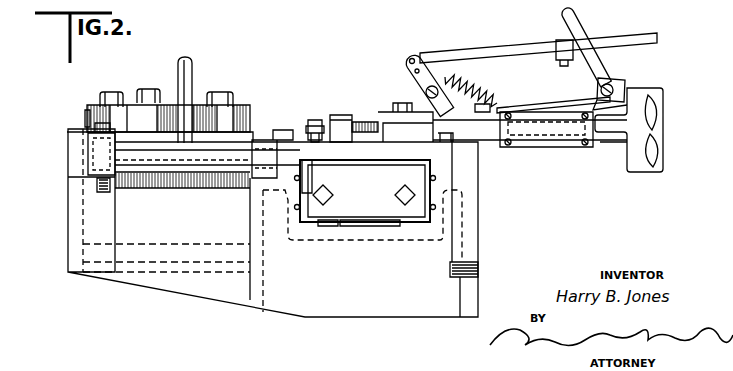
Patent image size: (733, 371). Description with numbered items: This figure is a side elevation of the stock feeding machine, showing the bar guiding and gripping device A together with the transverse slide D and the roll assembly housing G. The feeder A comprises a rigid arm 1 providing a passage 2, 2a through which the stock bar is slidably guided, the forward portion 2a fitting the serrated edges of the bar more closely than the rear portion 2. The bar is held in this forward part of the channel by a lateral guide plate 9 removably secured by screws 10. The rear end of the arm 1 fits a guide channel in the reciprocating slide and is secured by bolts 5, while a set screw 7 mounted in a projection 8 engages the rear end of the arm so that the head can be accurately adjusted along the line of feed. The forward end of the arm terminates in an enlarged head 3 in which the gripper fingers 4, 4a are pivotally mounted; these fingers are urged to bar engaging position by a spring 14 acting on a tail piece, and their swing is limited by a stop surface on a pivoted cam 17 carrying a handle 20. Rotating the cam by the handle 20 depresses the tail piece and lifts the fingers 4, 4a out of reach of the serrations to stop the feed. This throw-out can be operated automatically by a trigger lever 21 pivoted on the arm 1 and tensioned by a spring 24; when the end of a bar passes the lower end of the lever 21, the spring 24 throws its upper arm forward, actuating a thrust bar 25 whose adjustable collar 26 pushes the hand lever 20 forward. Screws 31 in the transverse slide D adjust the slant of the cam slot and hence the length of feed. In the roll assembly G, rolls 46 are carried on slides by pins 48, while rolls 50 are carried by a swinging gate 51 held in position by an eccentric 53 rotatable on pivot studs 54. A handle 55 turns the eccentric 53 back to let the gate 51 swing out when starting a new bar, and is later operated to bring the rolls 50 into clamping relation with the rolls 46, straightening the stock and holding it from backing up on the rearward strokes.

The rigid arm 1 is at (509, 104).
The passage 2 is at (492, 128).
The forward portion of guide channel 2a is at (622, 132).
The enlarged head 3 is at (655, 88).
The gripper finger 4 is at (652, 111).
The gripper finger 4a is at (652, 150).
The bolts 5 is at (400, 103).
The set screw 7 is at (313, 118).
The projection 8 is at (340, 115).
The lateral guide plate 9 is at (530, 128).
The screws 10 is at (585, 147).
The spring 14 is at (573, 106).
The cam 17 is at (620, 80).
The handle 20 is at (575, 14).
The trigger lever 21 is at (415, 80).
The spring 24 is at (470, 84).
The thrust bar 25 is at (458, 52).
The adjustable collar 26 is at (560, 42).
The screws 31 is at (398, 195).
The rolls 46 is at (88, 112).
The pins 48 is at (105, 96).
The rolls 50 is at (137, 117).
The gate 51 is at (178, 168).
The eccentric 53 is at (143, 163).
The pivot studs 54 is at (88, 155).
The handle 55 is at (194, 66).
The stock feeder A is at (551, 154).
The transverse slide D is at (370, 212).
The housing G is at (146, 87).